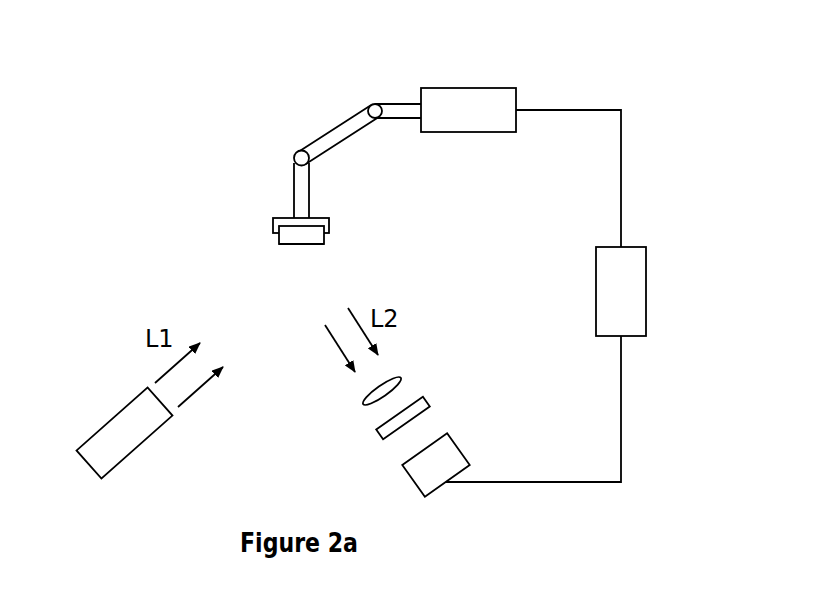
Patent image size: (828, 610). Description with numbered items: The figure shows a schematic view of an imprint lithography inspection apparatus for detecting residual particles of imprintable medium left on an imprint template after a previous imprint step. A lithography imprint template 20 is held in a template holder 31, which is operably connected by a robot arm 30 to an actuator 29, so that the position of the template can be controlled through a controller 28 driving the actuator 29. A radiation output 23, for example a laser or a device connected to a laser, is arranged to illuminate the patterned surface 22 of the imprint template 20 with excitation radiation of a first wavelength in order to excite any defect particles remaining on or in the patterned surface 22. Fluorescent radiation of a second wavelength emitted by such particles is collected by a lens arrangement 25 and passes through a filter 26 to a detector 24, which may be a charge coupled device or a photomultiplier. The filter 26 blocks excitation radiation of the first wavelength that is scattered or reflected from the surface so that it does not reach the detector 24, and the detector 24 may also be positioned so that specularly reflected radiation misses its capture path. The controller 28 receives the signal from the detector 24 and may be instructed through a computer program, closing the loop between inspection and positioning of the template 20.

The lithography imprint template 20 is at (315, 232).
The patterned surface 22 is at (312, 244).
The radiation output 23 is at (125, 427).
The detector 24 is at (450, 455).
The lens arrangement 25 is at (398, 380).
The filter 26 is at (420, 410).
The controller 28 is at (627, 283).
The actuator 29 is at (473, 103).
The robot arm 30 is at (335, 135).
The template holder 31 is at (282, 218).